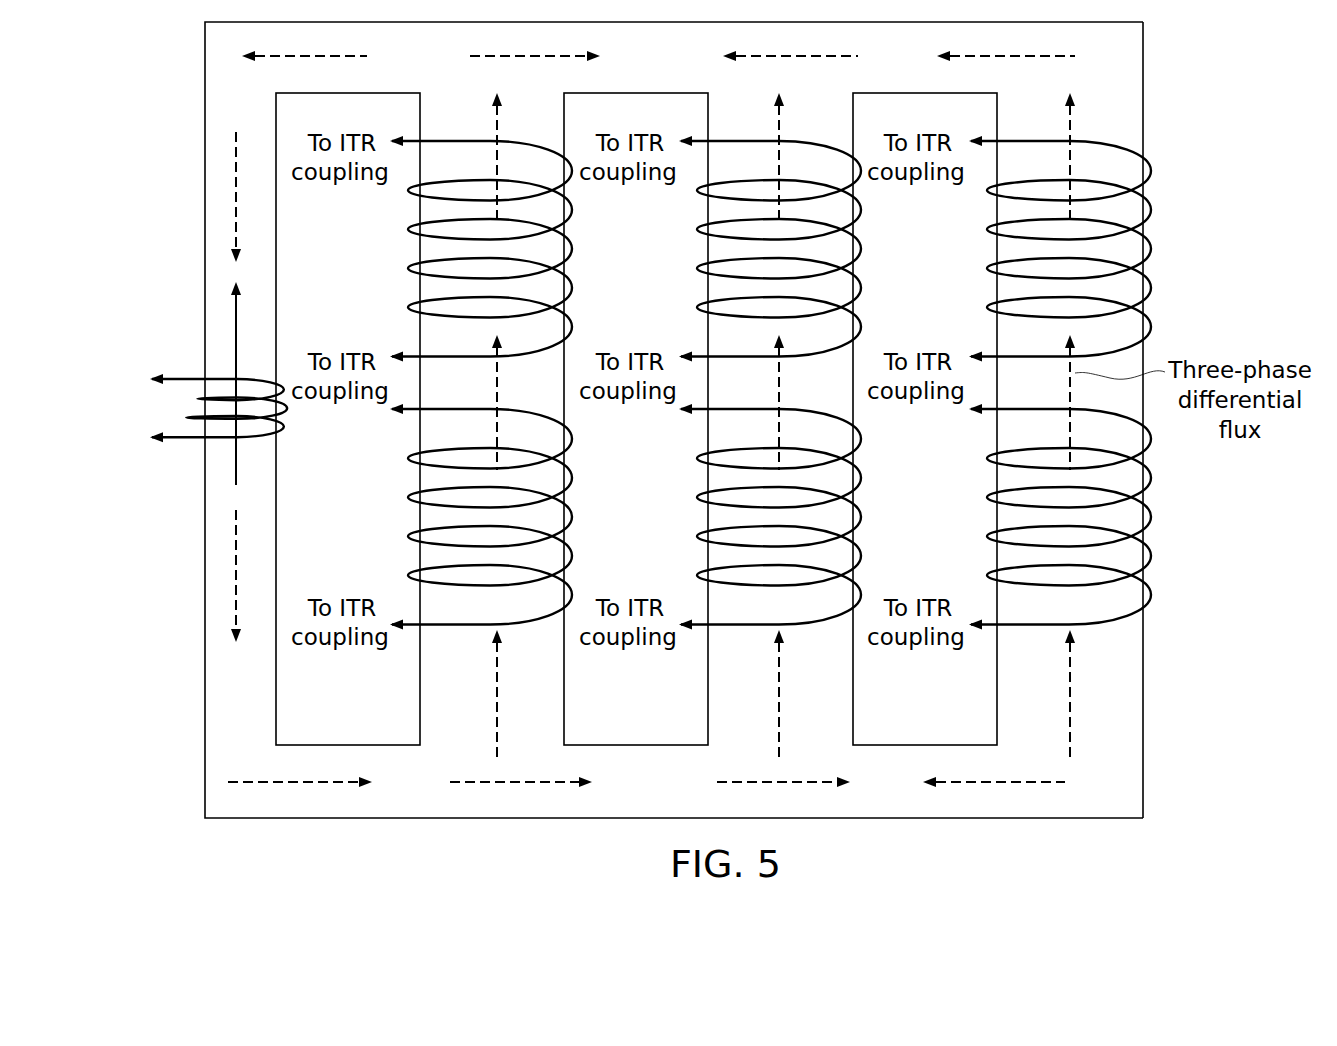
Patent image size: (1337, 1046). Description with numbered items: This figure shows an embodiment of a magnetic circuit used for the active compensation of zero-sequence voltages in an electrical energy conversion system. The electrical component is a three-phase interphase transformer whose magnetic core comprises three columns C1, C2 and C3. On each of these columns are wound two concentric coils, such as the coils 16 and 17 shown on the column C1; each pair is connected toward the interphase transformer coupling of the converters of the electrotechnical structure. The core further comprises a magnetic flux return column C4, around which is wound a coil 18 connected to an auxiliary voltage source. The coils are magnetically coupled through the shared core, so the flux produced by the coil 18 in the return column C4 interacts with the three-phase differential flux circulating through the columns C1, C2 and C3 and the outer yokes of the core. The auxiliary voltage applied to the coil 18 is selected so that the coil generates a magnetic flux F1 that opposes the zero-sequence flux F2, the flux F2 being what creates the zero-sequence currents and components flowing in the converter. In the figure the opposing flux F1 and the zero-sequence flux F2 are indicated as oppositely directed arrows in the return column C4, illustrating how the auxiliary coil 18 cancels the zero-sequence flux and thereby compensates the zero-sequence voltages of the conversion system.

The coil 16 is at (578, 256).
The coil 17 is at (578, 523).
The coil 18 is at (286, 390).
The column C1 is at (566, 708).
The column C2 is at (855, 708).
The column C3 is at (1145, 702).
The magnetic flux return column C4 is at (278, 708).
The magnetic flux F1 is at (232, 290).
The zero-sequence flux F2 is at (232, 186).